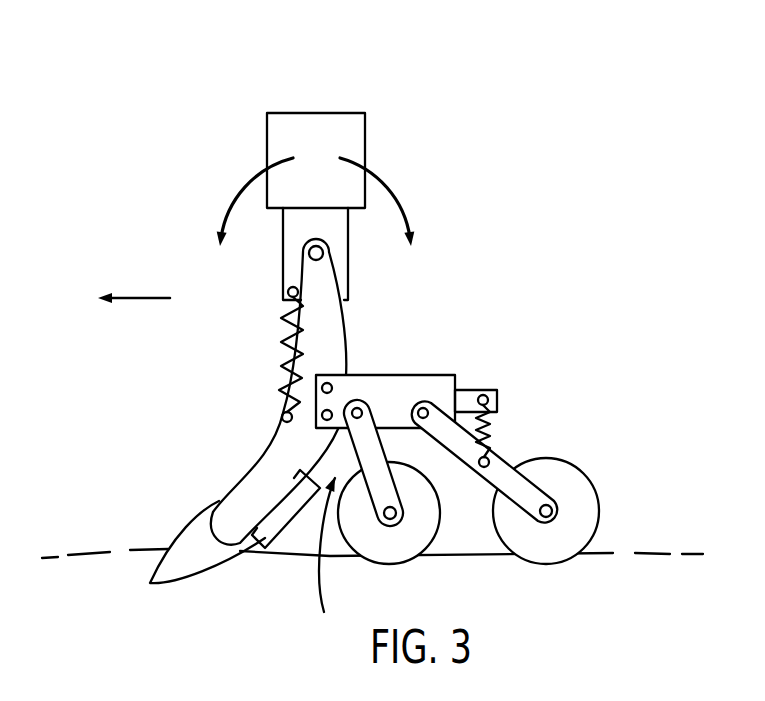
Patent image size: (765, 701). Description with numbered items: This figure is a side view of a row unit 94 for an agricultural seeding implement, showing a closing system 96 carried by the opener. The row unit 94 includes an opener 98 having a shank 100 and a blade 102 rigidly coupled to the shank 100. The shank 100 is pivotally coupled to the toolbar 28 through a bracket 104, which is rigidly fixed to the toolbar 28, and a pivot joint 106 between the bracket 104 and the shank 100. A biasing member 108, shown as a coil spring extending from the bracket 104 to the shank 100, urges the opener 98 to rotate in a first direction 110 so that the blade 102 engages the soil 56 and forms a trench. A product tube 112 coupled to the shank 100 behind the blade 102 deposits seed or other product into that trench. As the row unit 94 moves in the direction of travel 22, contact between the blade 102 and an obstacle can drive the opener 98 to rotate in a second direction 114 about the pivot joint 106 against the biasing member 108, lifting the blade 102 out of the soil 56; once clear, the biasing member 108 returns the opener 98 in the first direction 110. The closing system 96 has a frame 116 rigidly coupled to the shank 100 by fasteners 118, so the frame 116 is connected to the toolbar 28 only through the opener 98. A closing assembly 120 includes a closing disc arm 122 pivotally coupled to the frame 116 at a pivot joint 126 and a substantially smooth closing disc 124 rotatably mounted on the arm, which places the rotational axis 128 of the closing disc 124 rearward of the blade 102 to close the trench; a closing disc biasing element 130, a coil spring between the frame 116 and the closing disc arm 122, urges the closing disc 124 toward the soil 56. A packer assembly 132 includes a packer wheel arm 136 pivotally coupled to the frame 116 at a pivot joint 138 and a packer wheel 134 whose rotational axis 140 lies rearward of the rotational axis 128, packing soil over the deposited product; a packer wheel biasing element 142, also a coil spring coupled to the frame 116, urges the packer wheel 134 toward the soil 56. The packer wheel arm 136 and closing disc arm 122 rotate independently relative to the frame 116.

The direction of travel 22 is at (142, 295).
The toolbar 28 is at (367, 137).
The soil 56 is at (471, 556).
The row unit 94 is at (205, 143).
The closing system 96 is at (447, 327).
The opener 98 is at (221, 459).
The shank 100 is at (233, 490).
The blade 102 is at (193, 523).
The bracket 104 is at (350, 230).
The pivot joint 106 is at (318, 258).
The biasing member 108 is at (282, 357).
The first direction 110 is at (383, 180).
The product tube 112 is at (276, 534).
The second direction 114 is at (238, 174).
The frame 116 is at (348, 375).
The fasteners 118 is at (323, 416).
The closing assembly 120 is at (330, 546).
The closing disc arm 122 is at (371, 530).
The closing disc 124 is at (430, 470).
The pivot joint 126 is at (360, 408).
The rotational axis 128 is at (397, 517).
The closing disc biasing element 130 is at (330, 411).
The packer assembly 132 is at (535, 442).
The packer wheel 134 is at (582, 478).
The packer wheel arm 136 is at (528, 540).
The pivot joint 138 is at (432, 402).
The rotational axis 140 is at (548, 512).
The packer wheel biasing element 142 is at (490, 425).